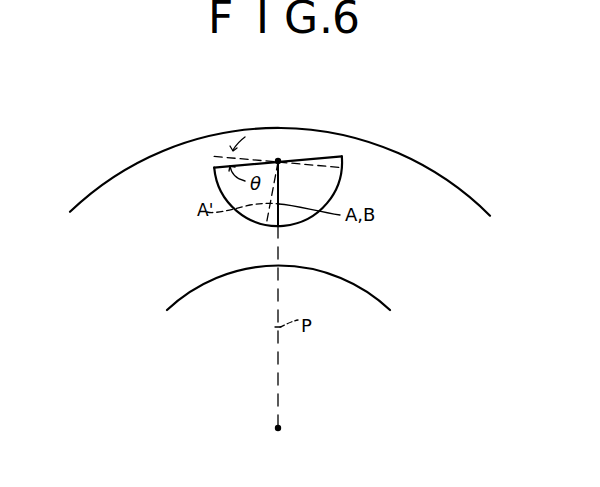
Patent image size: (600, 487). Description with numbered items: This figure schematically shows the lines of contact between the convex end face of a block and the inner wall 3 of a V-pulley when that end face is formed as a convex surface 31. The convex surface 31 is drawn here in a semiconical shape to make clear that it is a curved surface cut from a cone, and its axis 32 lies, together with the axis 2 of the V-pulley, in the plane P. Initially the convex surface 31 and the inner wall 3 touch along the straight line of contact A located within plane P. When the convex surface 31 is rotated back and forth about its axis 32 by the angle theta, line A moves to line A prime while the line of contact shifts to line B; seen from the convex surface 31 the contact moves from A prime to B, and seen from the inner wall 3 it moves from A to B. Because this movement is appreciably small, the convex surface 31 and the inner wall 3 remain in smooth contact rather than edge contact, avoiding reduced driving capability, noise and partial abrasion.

The axis of the V-pulley 2 is at (281, 428).
The inner wall of the V-pulley 3 is at (371, 171).
The convex surface 31 is at (310, 177).
The axis of the convex surface 32 is at (278, 157).